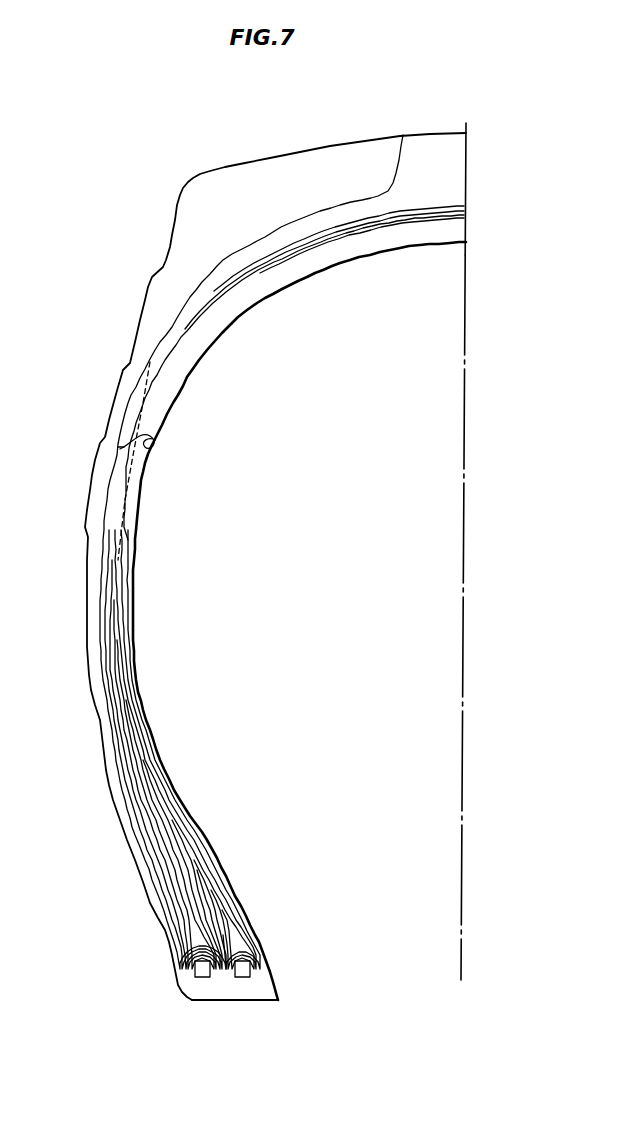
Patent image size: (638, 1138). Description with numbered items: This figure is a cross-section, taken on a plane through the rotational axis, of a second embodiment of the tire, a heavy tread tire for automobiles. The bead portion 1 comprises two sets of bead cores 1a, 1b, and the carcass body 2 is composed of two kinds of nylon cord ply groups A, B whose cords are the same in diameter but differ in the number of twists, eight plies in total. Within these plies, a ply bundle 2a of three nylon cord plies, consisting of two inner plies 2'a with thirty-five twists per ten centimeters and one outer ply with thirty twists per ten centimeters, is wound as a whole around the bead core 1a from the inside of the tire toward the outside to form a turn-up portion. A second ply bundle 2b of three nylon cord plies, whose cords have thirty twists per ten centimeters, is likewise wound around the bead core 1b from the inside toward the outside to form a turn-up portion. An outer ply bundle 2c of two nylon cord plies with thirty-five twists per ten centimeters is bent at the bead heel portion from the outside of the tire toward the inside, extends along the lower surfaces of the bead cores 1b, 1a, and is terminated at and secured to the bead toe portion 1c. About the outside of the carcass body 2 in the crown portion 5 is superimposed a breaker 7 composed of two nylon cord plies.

The crown portion 5 is at (370, 153).
The breaker 7 is at (440, 208).
The carcass body 2 is at (289, 592).
The outer ply bundle 2c is at (116, 756).
The ply bundle 2b is at (150, 823).
The ply bundle 2a is at (185, 850).
The inner plies 2'a is at (200, 749).
The bead portion 1 is at (262, 947).
The bead core 1a is at (246, 978).
The bead core 1b is at (201, 978).
The bead toe portion 1c is at (272, 985).
The nylon cord ply group A is at (113, 500).
The nylon cord ply group B is at (152, 436).